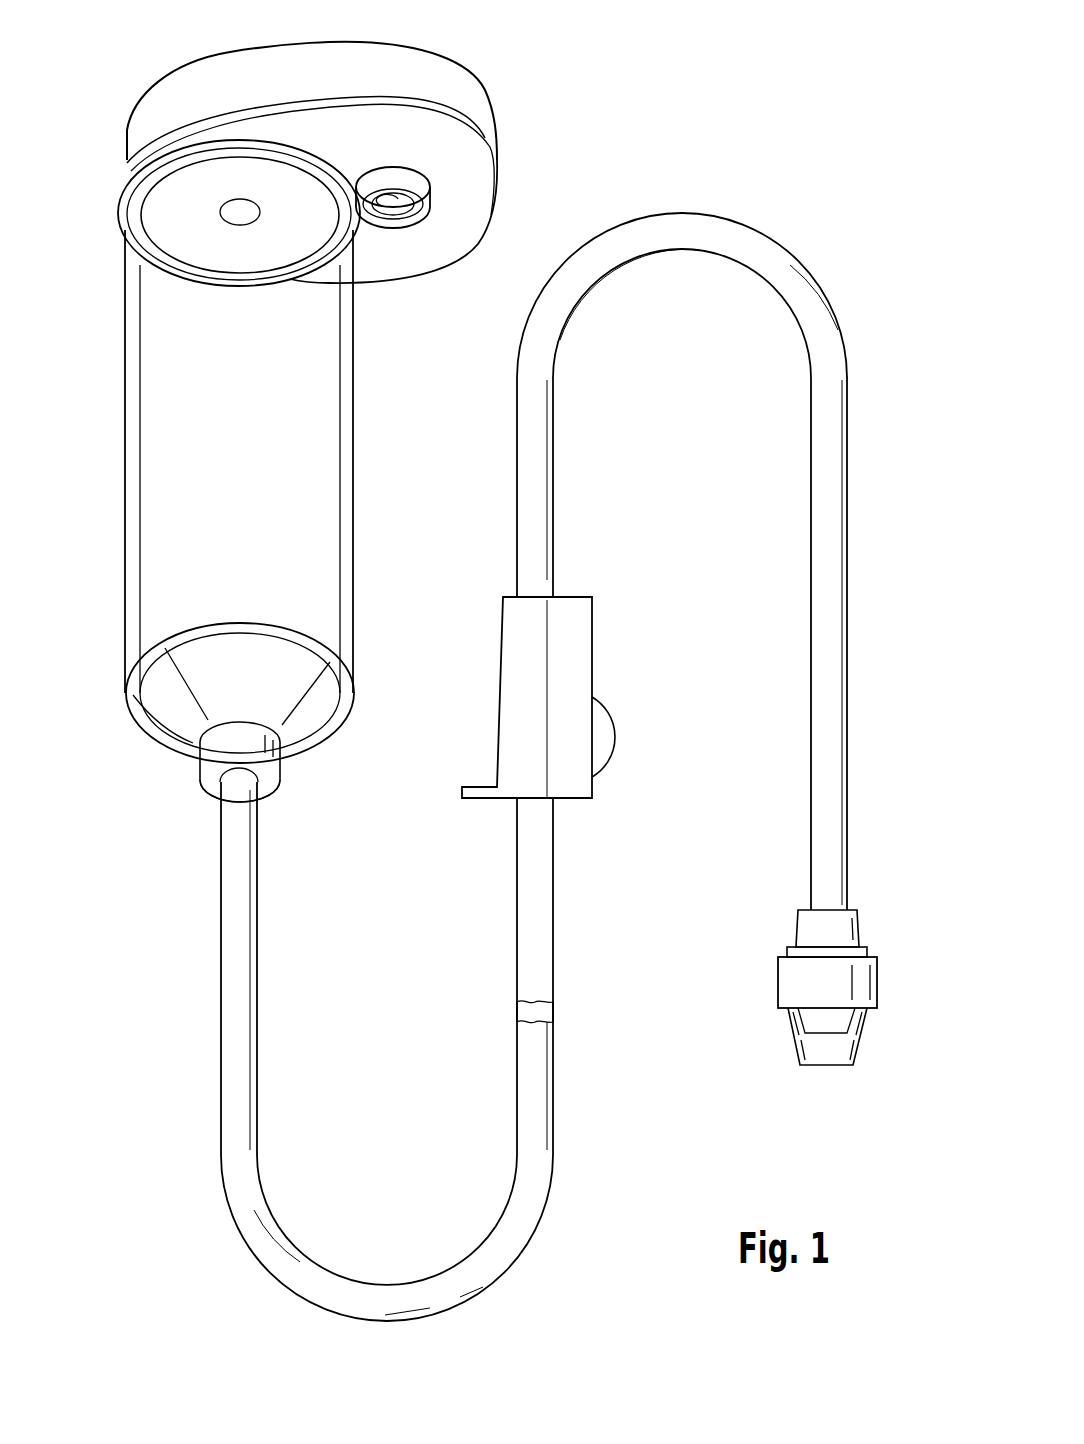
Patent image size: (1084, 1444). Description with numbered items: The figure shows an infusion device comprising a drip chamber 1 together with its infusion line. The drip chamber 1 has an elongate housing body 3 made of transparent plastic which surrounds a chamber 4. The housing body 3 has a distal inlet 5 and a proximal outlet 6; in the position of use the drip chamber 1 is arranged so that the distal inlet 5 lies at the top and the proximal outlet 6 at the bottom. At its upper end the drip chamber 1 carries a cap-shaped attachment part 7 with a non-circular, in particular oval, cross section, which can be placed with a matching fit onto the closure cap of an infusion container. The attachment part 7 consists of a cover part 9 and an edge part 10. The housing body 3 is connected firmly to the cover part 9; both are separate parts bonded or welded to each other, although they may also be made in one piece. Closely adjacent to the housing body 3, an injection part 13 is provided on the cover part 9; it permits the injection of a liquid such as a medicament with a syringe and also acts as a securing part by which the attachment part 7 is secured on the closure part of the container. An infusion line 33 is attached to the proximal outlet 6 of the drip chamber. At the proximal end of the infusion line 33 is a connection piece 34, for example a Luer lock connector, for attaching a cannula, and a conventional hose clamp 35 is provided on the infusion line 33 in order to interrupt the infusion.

The drip chamber 1 is at (497, 660).
The housing body 3 is at (277, 496).
The chamber 4 is at (338, 506).
The distal inlet 5 is at (287, 145).
The proximal outlet 6 is at (270, 783).
The attachment part 7 is at (359, 162).
The cover part 9 is at (467, 189).
The edge part 10 is at (450, 80).
The injection part 13 is at (429, 213).
The infusion line 33 is at (826, 447).
The connection piece 34 is at (790, 1035).
The hose clamp 35 is at (572, 639).